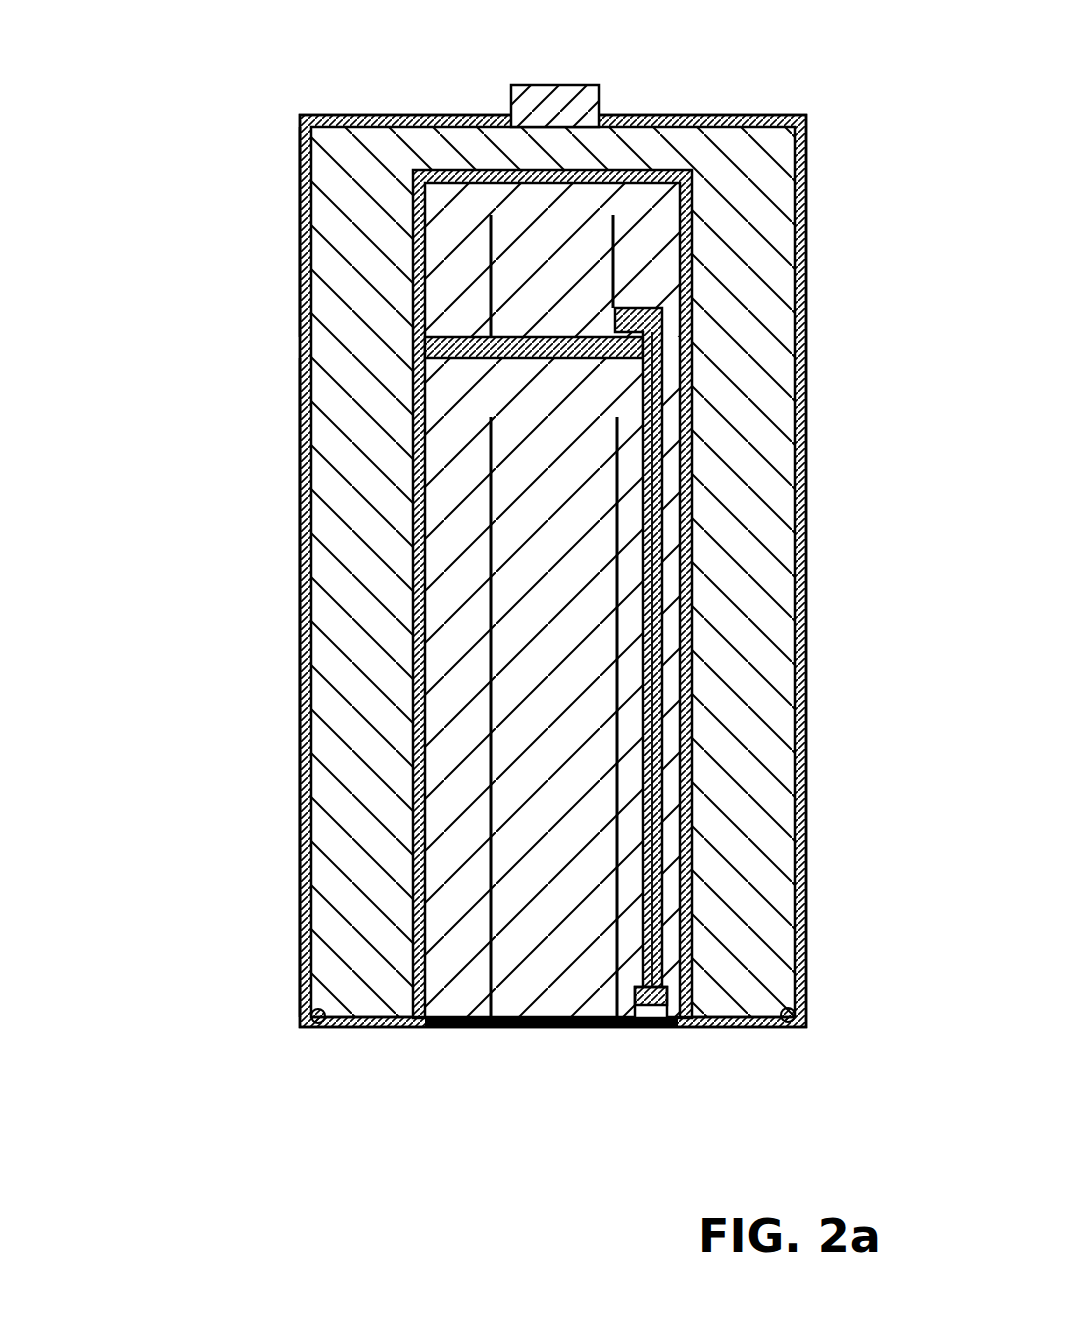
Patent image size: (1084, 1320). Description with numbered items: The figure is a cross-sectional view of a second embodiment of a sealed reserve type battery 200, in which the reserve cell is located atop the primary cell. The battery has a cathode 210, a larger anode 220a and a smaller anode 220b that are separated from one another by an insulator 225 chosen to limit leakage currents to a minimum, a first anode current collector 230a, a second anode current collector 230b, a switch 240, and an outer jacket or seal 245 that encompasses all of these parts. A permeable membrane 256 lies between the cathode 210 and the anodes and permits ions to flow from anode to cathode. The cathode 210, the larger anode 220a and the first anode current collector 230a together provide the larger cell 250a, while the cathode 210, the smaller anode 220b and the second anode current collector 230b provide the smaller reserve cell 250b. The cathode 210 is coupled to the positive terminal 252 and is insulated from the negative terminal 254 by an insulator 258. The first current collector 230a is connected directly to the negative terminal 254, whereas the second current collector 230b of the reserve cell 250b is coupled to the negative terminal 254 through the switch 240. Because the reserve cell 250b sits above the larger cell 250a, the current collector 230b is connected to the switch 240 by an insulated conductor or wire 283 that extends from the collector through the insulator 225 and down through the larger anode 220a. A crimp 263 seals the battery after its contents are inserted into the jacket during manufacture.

The battery 200 is at (322, 106).
The positive terminal 252 is at (566, 85).
The smaller anode 220b is at (412, 197).
The smaller reserve cell 250b is at (290, 248).
The second anode current collector 230b is at (613, 230).
The seal 245 is at (806, 295).
The insulator 225 is at (425, 352).
The cathode 210 is at (760, 402).
The permeable membrane 256 is at (412, 450).
The first anode current collector 230a is at (620, 560).
The insulated conductor or wire 283 is at (660, 750).
The larger anode 220a is at (440, 742).
The larger cell 250a is at (288, 850).
The crimp 263 is at (300, 1027).
The insulator 258 is at (350, 1027).
The negative terminal 254 is at (492, 1027).
The switch 240 is at (654, 1037).